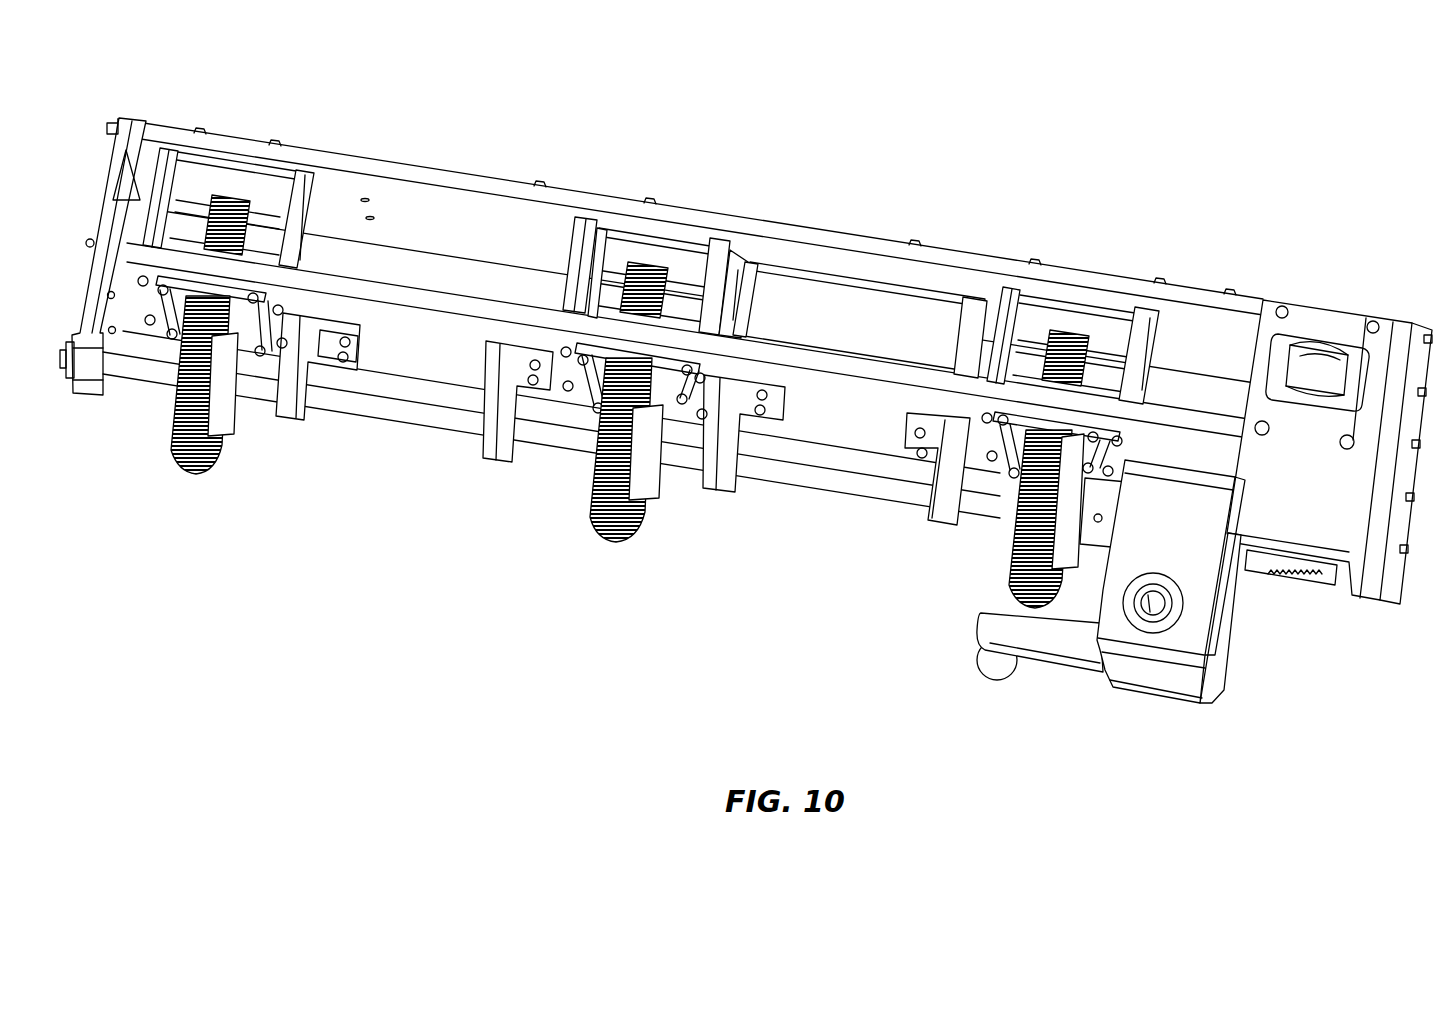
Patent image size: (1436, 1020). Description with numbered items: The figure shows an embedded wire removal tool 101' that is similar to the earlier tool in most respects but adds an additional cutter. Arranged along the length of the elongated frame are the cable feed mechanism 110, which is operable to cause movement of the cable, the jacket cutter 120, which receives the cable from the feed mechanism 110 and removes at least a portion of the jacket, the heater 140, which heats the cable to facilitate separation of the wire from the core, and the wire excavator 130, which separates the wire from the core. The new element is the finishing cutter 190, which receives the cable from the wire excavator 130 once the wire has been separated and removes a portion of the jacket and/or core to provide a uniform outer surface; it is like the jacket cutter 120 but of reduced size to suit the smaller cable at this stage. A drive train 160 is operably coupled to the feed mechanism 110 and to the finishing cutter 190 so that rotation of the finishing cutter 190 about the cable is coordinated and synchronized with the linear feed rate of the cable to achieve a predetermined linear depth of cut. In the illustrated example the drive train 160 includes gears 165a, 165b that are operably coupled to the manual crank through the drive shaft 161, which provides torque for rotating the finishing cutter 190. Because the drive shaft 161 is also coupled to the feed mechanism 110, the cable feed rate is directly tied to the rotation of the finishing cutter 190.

The embedded wire removal tool 101' is at (661, 250).
The cable feed mechanism 110 is at (1260, 625).
The jacket cutter 120 is at (1076, 324).
The wire excavator 130 is at (653, 248).
The heater 140 is at (855, 298).
The drive train 160 is at (675, 530).
The drive shaft 161 is at (408, 418).
The gear 165a is at (195, 472).
The gear 165b is at (232, 200).
The finishing cutter 190 is at (226, 178).